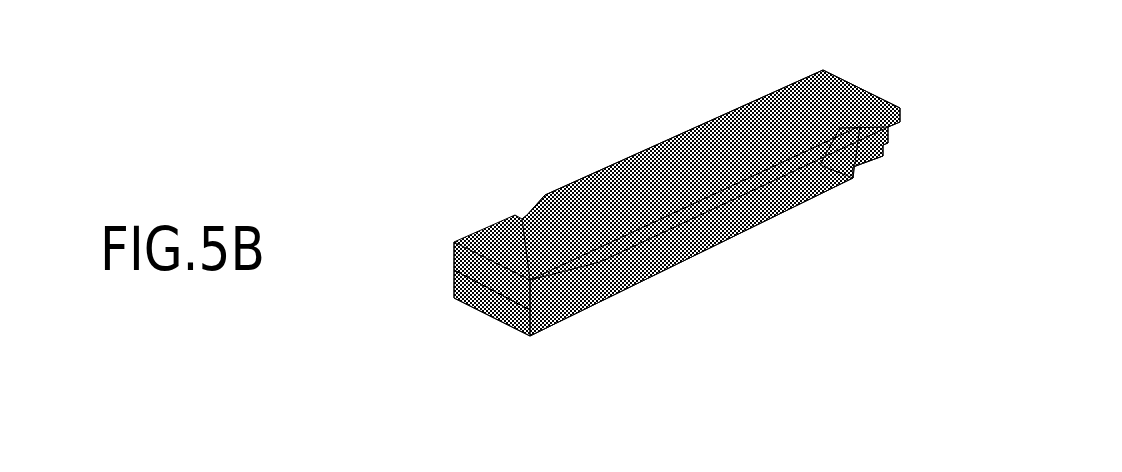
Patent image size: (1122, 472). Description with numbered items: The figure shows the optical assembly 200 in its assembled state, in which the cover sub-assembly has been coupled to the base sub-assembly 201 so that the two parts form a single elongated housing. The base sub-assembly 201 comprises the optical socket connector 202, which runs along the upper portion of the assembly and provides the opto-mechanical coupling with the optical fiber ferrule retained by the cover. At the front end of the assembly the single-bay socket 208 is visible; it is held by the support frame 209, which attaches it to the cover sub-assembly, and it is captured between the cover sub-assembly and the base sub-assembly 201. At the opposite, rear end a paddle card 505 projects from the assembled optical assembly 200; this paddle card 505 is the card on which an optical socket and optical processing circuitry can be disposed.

The optical assembly 200 is at (900, 373).
The base sub-assembly 201 is at (820, 189).
The optical socket connector 202 is at (640, 148).
The single-bay socket 208 is at (472, 260).
The support frame 209 is at (467, 293).
The paddle card 505 is at (885, 135).